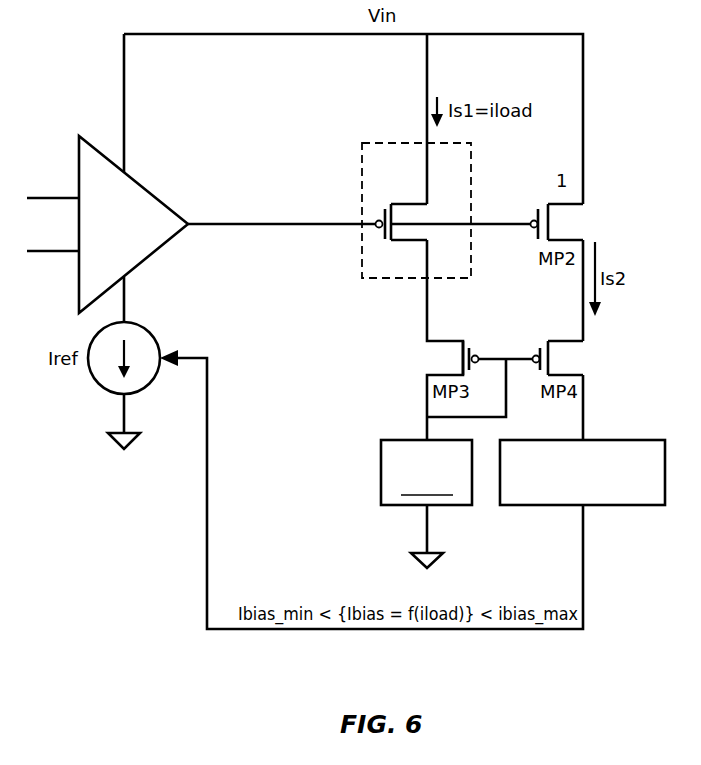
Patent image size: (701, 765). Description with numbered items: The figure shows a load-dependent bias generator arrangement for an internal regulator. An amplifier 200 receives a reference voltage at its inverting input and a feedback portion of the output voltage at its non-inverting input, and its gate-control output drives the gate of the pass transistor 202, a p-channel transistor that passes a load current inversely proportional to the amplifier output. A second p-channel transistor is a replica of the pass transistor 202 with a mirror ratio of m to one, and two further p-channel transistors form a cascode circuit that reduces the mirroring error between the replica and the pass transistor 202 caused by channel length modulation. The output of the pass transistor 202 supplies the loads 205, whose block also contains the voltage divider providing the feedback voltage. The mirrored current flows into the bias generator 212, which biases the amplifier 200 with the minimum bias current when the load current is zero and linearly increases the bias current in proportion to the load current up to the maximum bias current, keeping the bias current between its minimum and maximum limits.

The amplifier 200 is at (129, 236).
The pass transistor 202 is at (468, 167).
The loads 205 is at (443, 471).
The bias generator 212 is at (598, 496).